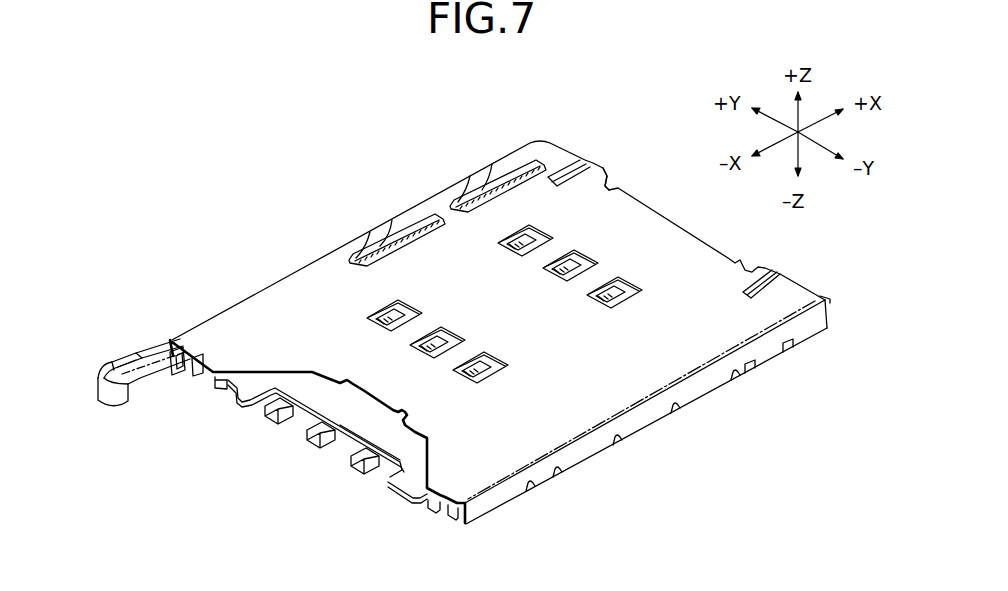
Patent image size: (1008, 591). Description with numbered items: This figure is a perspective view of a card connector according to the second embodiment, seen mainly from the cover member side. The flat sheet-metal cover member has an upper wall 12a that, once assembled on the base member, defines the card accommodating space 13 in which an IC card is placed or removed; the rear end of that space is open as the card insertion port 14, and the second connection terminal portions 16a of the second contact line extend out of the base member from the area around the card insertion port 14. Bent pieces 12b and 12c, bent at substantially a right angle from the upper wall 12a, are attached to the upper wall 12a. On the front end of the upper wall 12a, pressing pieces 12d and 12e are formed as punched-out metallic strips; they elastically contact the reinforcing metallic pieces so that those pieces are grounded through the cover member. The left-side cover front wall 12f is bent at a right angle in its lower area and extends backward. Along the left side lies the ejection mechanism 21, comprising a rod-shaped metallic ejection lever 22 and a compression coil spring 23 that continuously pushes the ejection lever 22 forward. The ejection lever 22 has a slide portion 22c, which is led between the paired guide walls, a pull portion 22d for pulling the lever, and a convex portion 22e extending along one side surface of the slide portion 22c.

The ejection mechanism 21 is at (243, 282).
The upper wall 12a is at (613, 395).
The bent piece 12b is at (392, 247).
The bent piece 12c is at (473, 197).
The pressing piece 12d is at (580, 160).
The pressing piece 12e is at (807, 260).
The left-side cover front wall 12f is at (608, 168).
The compression coil spring 23 is at (367, 240).
The ejection lever 22 is at (134, 396).
The slide portion 22c is at (150, 358).
The pull portion 22d is at (106, 364).
The convex portion 22e is at (180, 377).
The card accommodating space 13 is at (357, 430).
The card insertion port 14 is at (290, 433).
The second connection terminal portion 16a is at (272, 418).